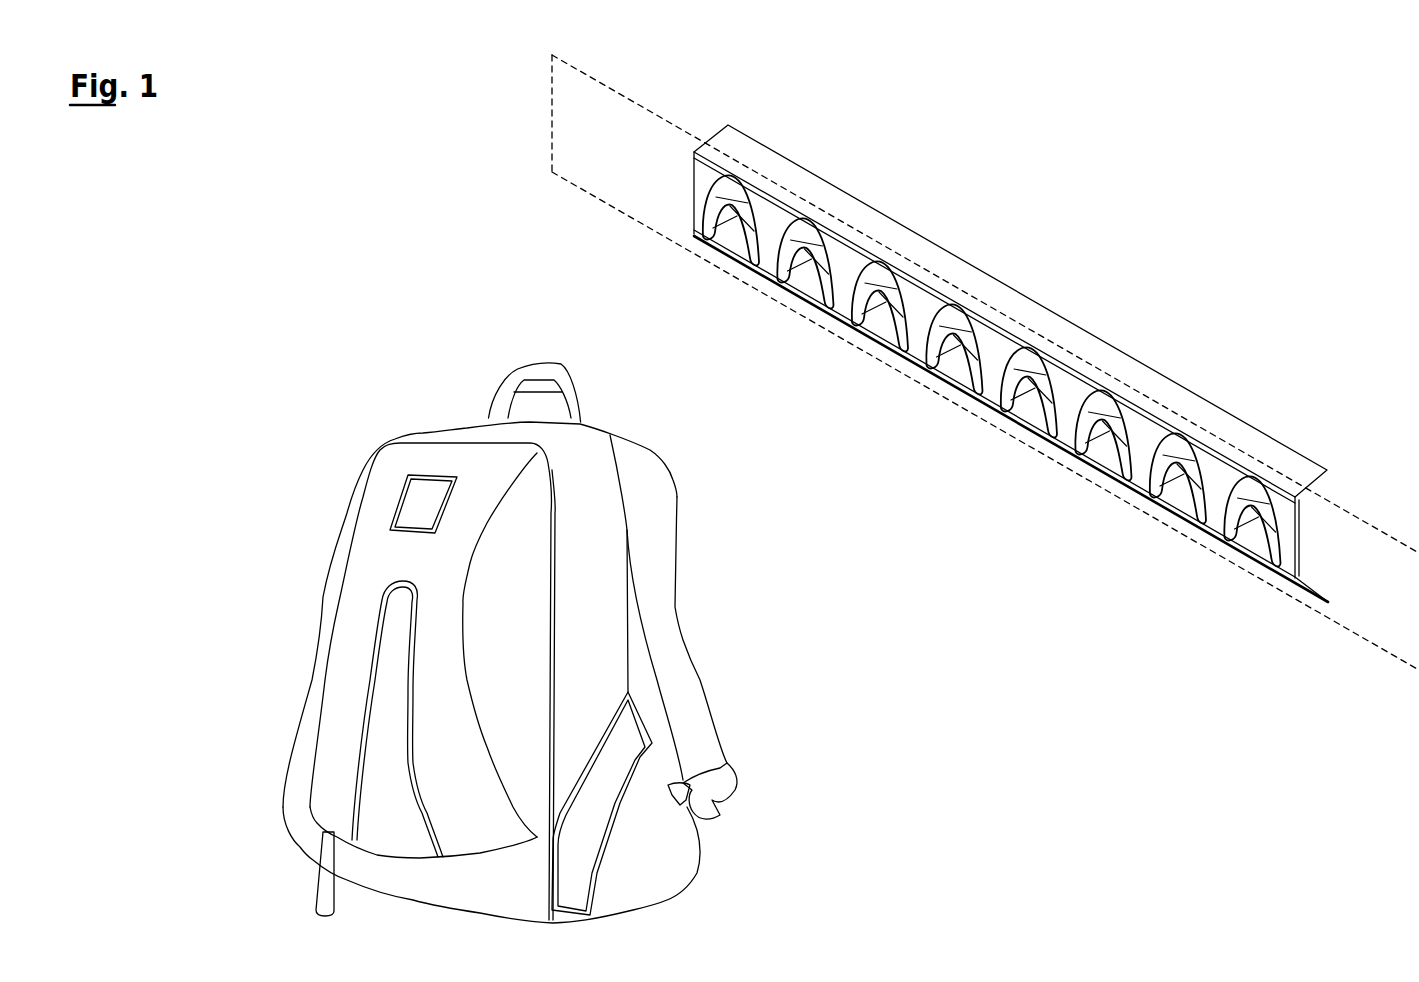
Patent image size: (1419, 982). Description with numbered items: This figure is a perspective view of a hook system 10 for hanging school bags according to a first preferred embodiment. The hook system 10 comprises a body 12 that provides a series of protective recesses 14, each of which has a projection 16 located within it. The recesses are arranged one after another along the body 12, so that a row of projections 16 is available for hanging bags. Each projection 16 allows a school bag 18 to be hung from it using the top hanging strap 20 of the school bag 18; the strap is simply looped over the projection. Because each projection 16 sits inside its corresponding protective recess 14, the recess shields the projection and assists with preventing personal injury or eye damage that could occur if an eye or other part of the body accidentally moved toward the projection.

The hook system 10 is at (1236, 302).
The body 12 is at (1303, 482).
The protective recess 14 is at (993, 477).
The projection 16 is at (1180, 487).
The school bag 18 is at (468, 427).
The top hanging strap 20 is at (545, 357).